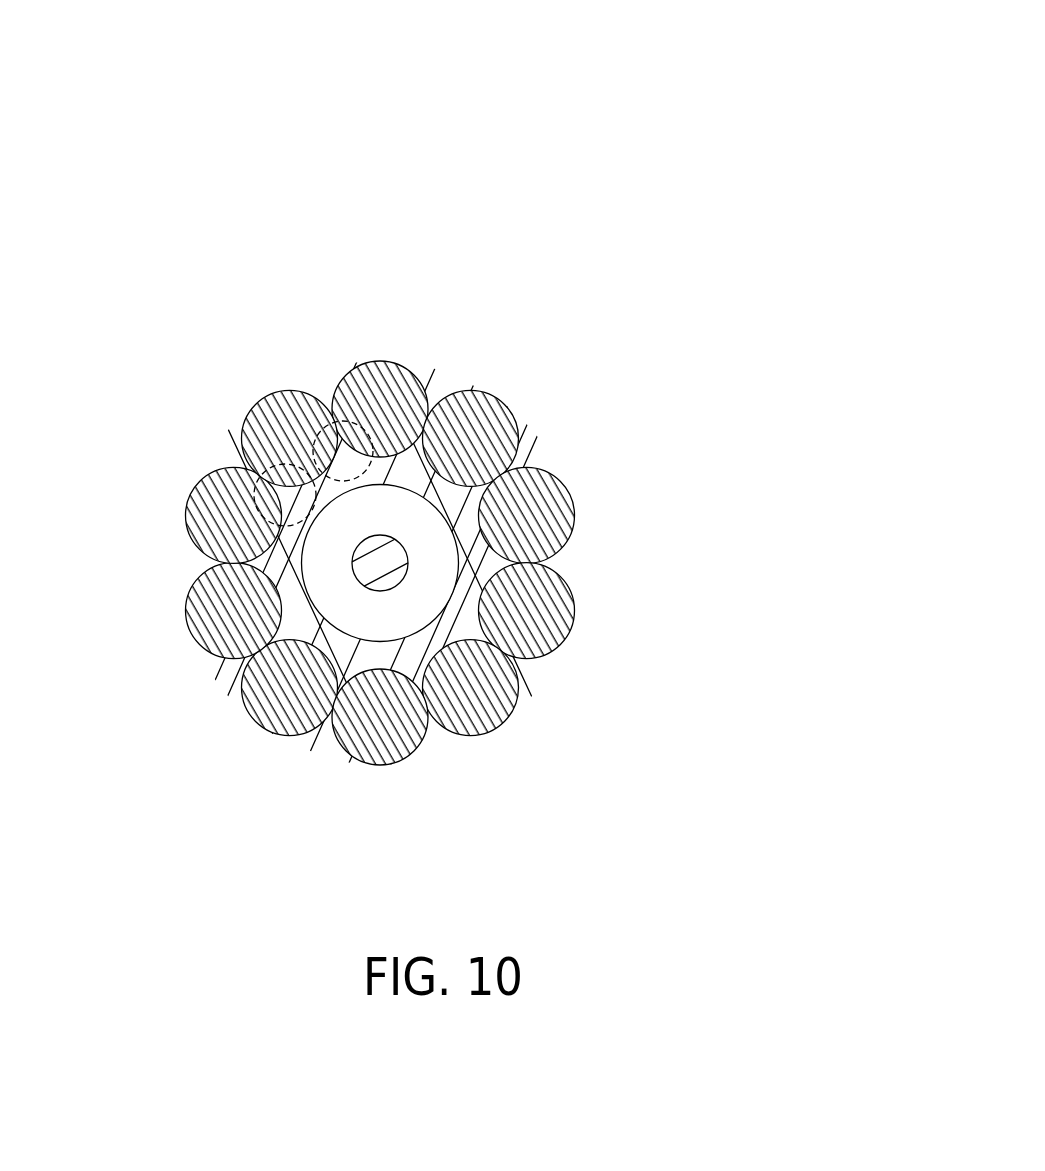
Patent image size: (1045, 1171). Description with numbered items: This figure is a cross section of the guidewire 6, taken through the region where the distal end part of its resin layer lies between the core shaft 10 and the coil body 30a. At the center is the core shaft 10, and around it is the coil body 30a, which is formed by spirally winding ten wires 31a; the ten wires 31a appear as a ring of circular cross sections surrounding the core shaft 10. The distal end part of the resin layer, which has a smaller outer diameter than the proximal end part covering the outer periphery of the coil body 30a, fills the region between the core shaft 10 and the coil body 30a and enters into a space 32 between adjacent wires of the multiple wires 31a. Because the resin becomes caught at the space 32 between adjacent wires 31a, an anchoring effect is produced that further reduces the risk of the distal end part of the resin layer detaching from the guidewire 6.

The guidewire 6 is at (344, 200).
The core shaft 10 is at (373, 581).
The coil body 30a is at (575, 527).
The wires 31a is at (545, 617).
The space 32 is at (330, 420).